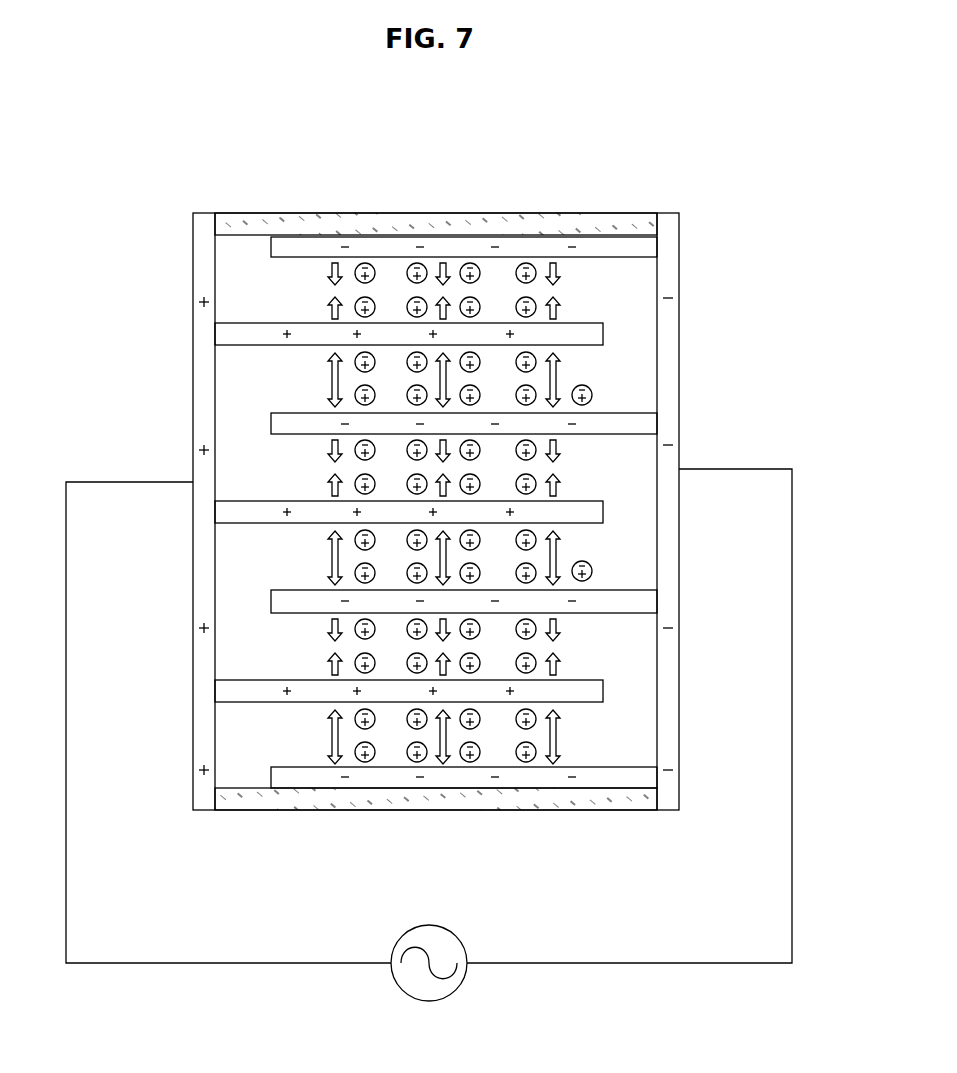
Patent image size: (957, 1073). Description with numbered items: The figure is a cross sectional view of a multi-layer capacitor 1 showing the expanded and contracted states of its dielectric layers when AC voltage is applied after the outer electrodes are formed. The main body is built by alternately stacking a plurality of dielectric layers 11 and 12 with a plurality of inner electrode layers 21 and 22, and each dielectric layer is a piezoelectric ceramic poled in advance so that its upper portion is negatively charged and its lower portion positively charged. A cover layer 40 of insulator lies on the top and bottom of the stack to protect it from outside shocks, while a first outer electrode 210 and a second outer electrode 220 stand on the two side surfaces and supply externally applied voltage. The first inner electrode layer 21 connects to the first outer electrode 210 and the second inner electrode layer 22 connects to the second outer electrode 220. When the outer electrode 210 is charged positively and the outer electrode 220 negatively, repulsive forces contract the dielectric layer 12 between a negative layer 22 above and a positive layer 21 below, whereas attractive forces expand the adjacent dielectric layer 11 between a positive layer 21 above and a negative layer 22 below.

The multi-layer capacitor 1 is at (409, 192).
The first dielectric layer 11 is at (622, 377).
The second dielectric layer 12 is at (618, 284).
The first inner electrode layer 21 is at (257, 337).
The second inner electrode layer 22 is at (275, 245).
The cover layer 40 is at (562, 220).
The first outer electrode 210 is at (200, 750).
The second outer electrode 220 is at (672, 602).